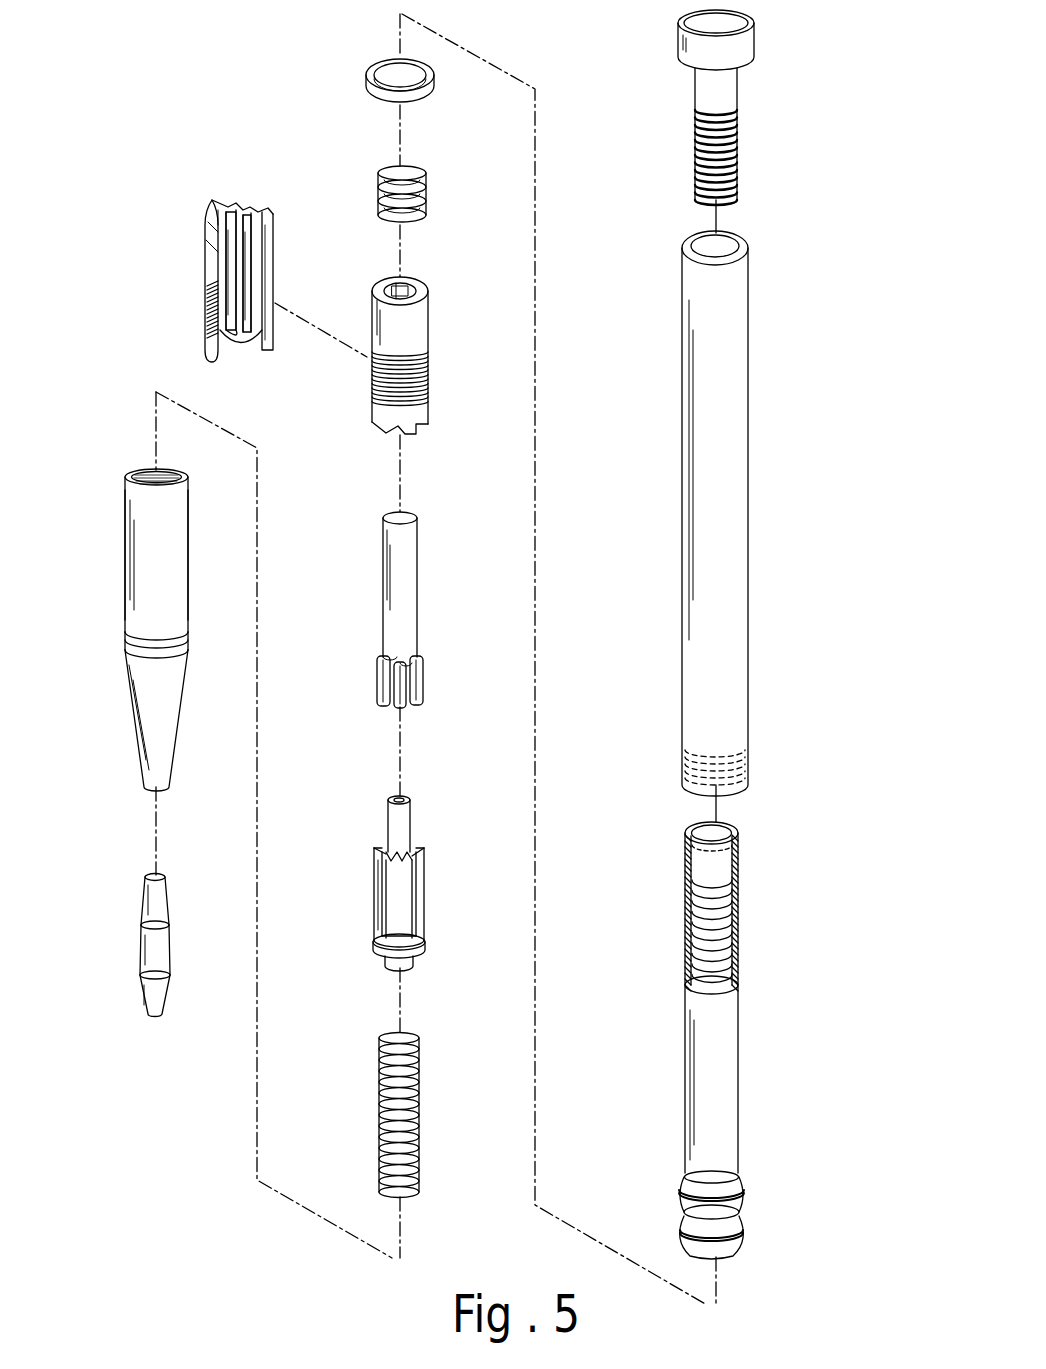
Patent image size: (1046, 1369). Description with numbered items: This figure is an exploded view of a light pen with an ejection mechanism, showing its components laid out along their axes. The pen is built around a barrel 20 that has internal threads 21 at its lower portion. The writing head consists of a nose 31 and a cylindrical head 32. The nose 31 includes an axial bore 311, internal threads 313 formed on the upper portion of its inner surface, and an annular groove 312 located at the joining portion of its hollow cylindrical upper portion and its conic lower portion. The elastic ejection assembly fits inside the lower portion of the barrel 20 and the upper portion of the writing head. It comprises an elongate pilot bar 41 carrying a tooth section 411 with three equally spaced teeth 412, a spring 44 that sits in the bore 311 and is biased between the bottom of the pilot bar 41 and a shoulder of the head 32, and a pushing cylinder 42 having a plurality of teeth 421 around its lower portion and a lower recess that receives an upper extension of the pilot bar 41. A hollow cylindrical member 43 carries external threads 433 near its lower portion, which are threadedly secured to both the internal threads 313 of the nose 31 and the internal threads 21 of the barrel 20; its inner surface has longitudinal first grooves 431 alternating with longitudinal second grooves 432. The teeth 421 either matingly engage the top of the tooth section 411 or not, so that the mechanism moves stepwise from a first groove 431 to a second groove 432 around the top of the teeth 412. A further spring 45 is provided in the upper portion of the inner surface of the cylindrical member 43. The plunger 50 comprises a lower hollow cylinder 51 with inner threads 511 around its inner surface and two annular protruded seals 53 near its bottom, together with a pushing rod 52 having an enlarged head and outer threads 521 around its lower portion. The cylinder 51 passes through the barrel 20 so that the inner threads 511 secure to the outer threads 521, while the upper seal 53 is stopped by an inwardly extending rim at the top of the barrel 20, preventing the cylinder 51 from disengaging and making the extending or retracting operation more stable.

The barrel 20 is at (760, 513).
The internal threads 21 is at (750, 762).
The nose 31 is at (155, 613).
The axial bore 311 is at (172, 492).
The annular groove 312 is at (130, 643).
The internal threads 313 is at (150, 478).
The cylindrical head 32 is at (145, 958).
The elongate pilot bar 41 is at (394, 883).
The tooth section 411 is at (385, 862).
The teeth 412 is at (392, 906).
The pushing cylinder 42 is at (395, 610).
The teeth 421 is at (385, 687).
The hollow cylindrical member 43 is at (325, 257).
The first grooves 431 is at (230, 205).
The second grooves 432 is at (250, 208).
The external threads 433 is at (428, 380).
The spring 44 is at (420, 1110).
The spring 45 is at (372, 88).
The plunger 50 is at (794, 107).
The lower hollow cylinder 51 is at (762, 997).
The inner threads 511 is at (730, 930).
The pushing rod 52 is at (722, 52).
The outer threads 521 is at (737, 158).
The annular protruded seals 53 is at (732, 1200).